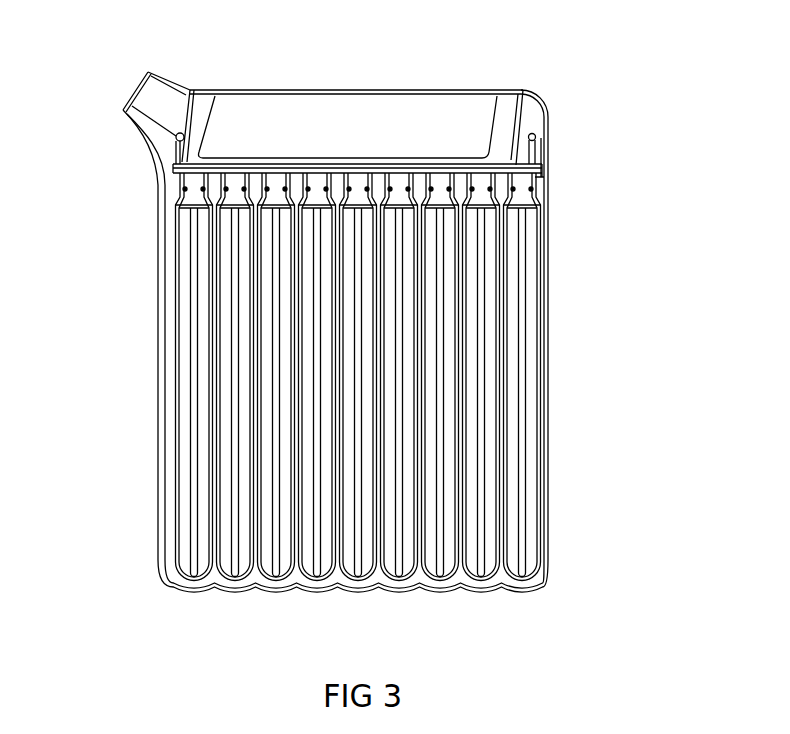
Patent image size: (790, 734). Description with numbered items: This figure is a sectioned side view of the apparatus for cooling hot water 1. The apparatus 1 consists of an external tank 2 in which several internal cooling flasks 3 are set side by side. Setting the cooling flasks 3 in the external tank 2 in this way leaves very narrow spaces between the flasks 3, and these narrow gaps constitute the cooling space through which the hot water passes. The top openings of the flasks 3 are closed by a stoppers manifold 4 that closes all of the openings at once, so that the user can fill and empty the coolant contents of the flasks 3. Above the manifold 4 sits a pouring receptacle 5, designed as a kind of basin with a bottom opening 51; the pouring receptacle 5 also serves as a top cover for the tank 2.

The apparatus for cooling hot water 1 is at (648, 150).
The external tank 2 is at (549, 220).
The internal cooling flask 3 is at (519, 340).
The stoppers manifold 4 is at (195, 190).
The pouring receptacle 5 is at (428, 108).
The bottom opening 51 is at (130, 101).